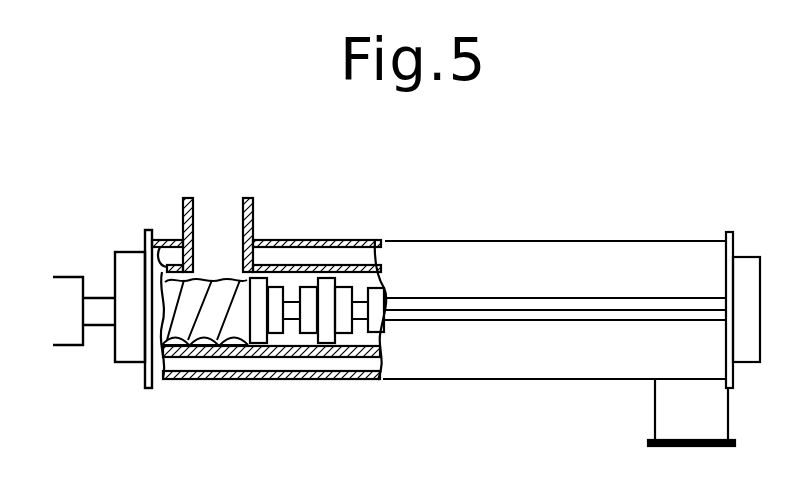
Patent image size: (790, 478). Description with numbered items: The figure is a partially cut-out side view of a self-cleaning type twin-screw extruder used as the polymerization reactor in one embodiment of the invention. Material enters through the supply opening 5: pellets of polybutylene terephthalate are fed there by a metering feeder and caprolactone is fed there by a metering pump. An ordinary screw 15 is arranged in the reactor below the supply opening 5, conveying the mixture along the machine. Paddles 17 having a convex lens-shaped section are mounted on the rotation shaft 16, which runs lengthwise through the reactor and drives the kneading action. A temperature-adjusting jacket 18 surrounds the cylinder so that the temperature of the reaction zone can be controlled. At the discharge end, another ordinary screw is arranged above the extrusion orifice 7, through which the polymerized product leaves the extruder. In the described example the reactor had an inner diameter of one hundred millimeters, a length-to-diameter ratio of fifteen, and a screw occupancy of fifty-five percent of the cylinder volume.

The supply opening 5 is at (218, 203).
The extrusion orifice 7 is at (667, 412).
The screw 15 is at (212, 323).
The rotation shaft 16 is at (528, 303).
The paddle 17 is at (345, 298).
The temperature-adjusting jacket 18 is at (335, 363).